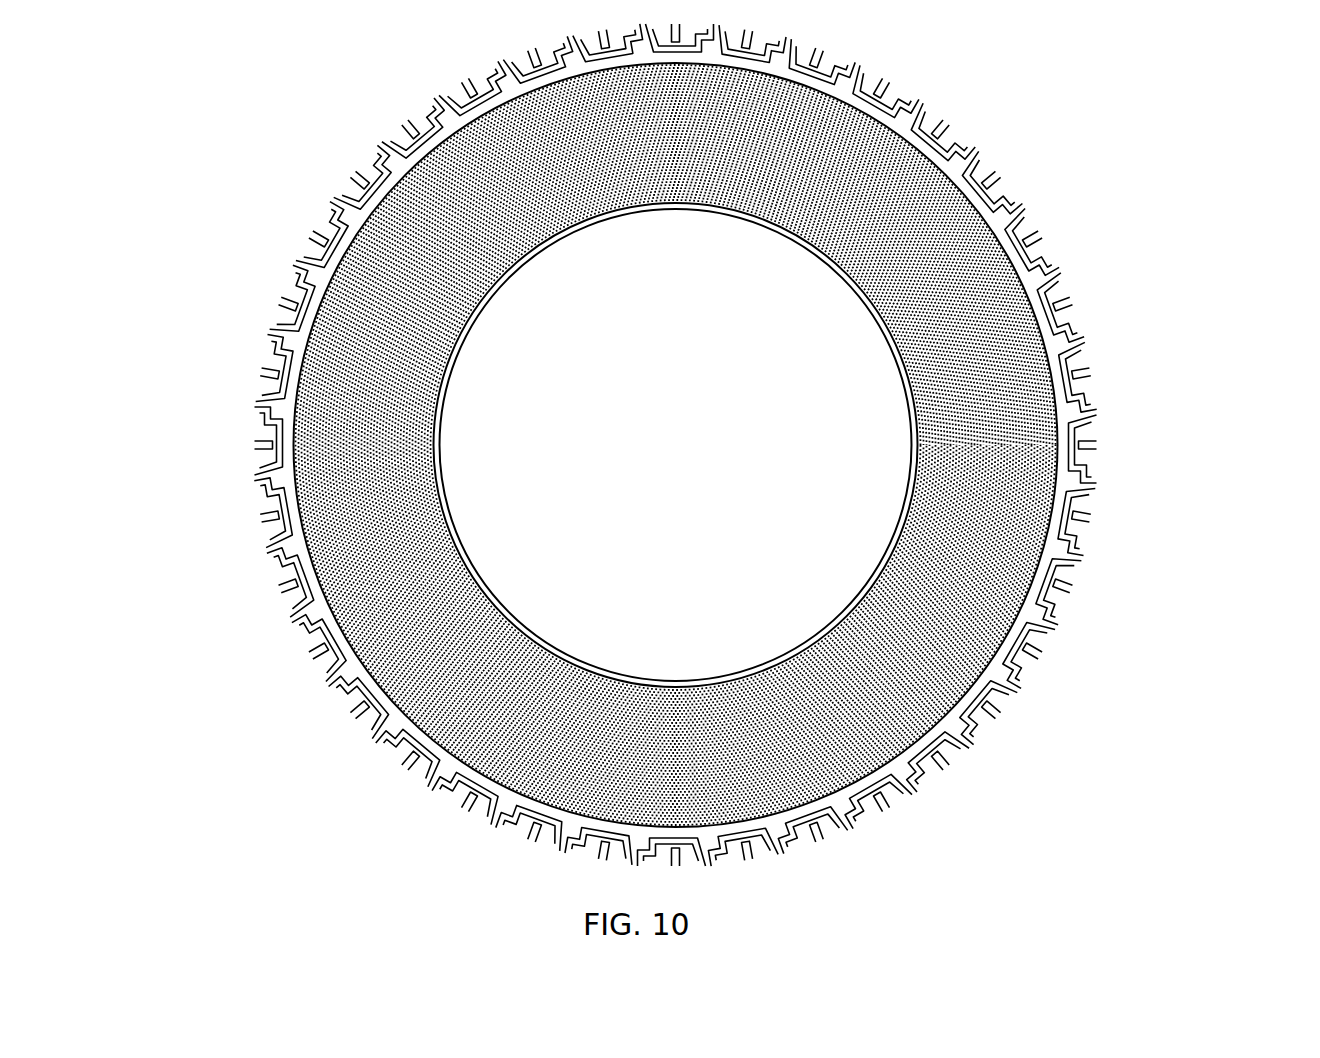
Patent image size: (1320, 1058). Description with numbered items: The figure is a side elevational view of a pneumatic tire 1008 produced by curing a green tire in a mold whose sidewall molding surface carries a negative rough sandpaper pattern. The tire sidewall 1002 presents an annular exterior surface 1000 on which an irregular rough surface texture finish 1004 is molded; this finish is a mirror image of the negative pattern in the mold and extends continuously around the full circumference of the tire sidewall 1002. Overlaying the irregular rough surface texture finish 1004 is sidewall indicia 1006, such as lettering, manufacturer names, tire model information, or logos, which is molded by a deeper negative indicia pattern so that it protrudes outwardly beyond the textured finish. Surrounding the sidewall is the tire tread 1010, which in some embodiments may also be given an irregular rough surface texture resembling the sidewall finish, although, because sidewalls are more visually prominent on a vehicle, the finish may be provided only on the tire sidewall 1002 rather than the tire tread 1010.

The annular exterior surface 1000 is at (701, 445).
The tire sidewall 1002 is at (705, 445).
The irregular rough surface texture finish 1004 is at (863, 188).
The sidewall indicia 1006 is at (960, 292).
The pneumatic tire 1008 is at (1142, 298).
The tire tread 1010 is at (702, 445).